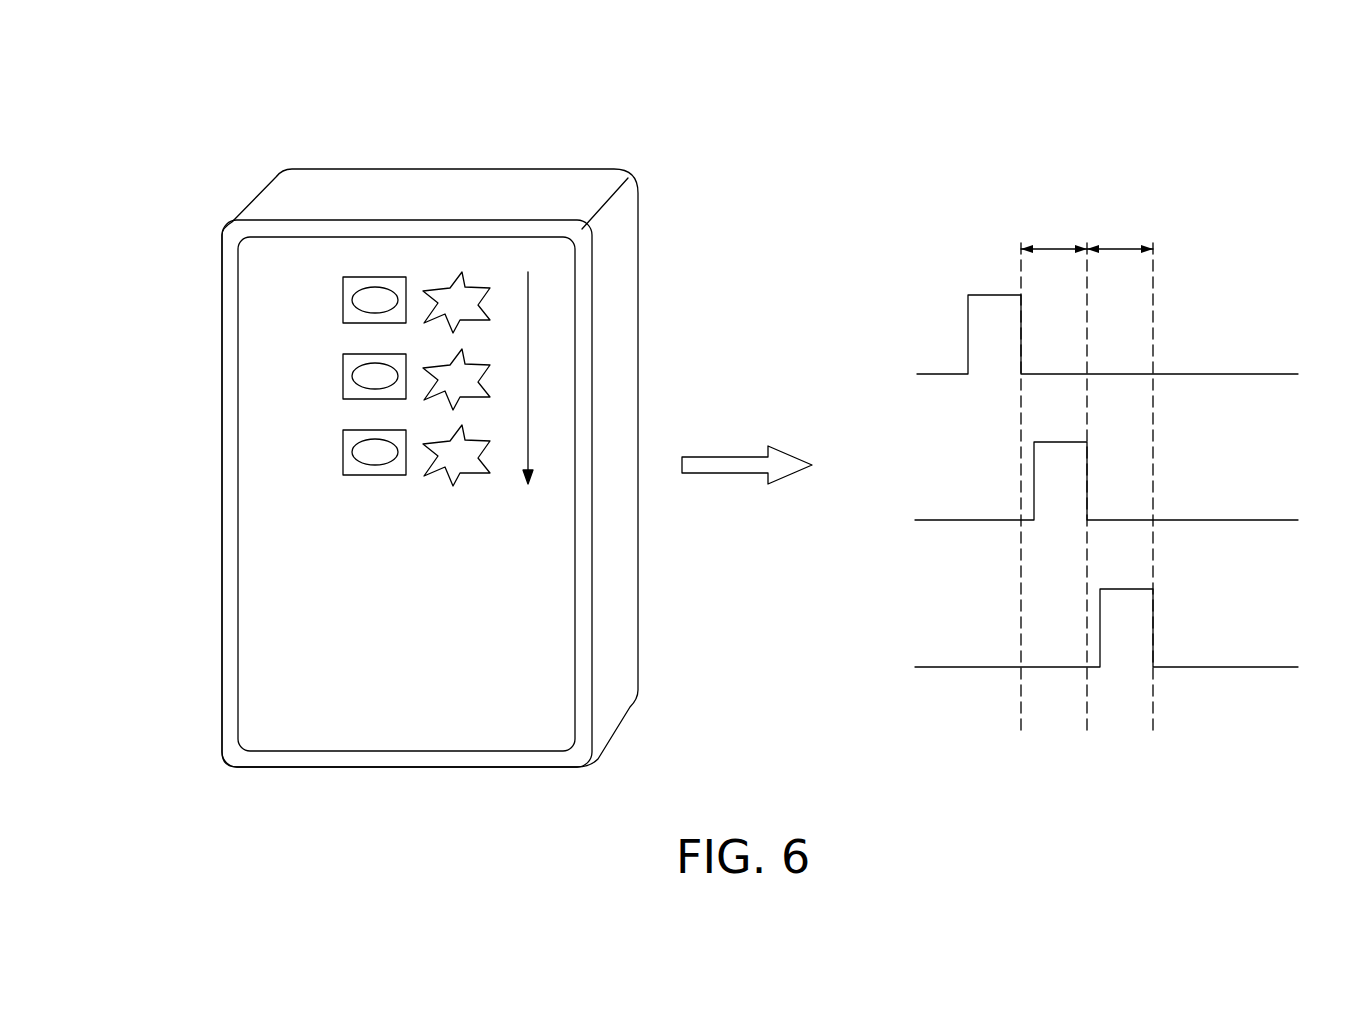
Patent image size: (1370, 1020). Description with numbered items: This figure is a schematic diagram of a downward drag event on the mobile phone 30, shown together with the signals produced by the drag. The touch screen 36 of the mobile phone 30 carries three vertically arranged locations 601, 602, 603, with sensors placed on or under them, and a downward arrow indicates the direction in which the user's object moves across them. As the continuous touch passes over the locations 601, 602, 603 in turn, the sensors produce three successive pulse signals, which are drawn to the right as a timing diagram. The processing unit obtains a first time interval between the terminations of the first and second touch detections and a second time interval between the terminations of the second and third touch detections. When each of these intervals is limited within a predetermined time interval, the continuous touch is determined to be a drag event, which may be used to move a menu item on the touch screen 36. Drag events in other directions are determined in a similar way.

The mobile phone 30 is at (737, 407).
The touch screen 36 is at (378, 236).
The location 601 is at (350, 301).
The location 602 is at (350, 377).
The location 603 is at (350, 453).